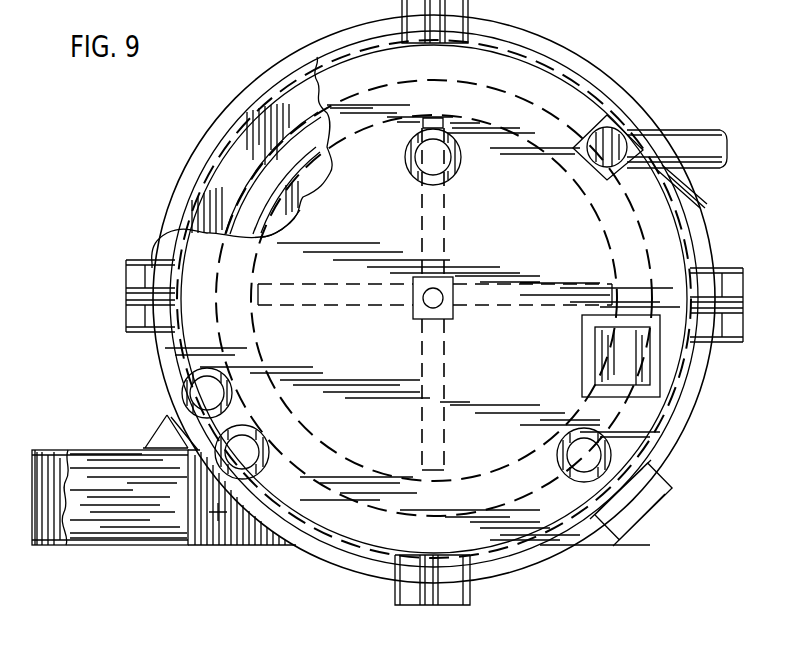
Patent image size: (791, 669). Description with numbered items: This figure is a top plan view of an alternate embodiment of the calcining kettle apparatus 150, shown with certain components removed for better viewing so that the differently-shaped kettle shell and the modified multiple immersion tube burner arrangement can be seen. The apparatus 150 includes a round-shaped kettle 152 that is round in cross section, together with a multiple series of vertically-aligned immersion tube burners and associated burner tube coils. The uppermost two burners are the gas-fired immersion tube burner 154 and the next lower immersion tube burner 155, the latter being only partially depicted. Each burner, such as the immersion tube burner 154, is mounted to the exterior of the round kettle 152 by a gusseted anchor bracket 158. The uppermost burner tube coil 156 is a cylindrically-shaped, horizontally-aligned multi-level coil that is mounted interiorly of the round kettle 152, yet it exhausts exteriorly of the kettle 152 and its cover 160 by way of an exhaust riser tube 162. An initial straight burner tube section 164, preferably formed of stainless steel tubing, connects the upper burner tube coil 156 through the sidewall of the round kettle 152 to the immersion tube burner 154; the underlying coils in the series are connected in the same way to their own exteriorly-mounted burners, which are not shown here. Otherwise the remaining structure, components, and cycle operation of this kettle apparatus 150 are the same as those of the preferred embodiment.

The calcining kettle apparatus 150 is at (533, 570).
The round-shaped kettle 152 is at (227, 127).
The immersion tube burner 154 is at (113, 530).
The immersion tube burner 155 is at (63, 537).
The upper burner tube coil 156 is at (238, 197).
The gusseted anchor bracket 158 is at (153, 442).
The cover 160 is at (376, 357).
The exhaust riser tube 162 is at (615, 445).
The straight burner tube section 164 is at (218, 512).